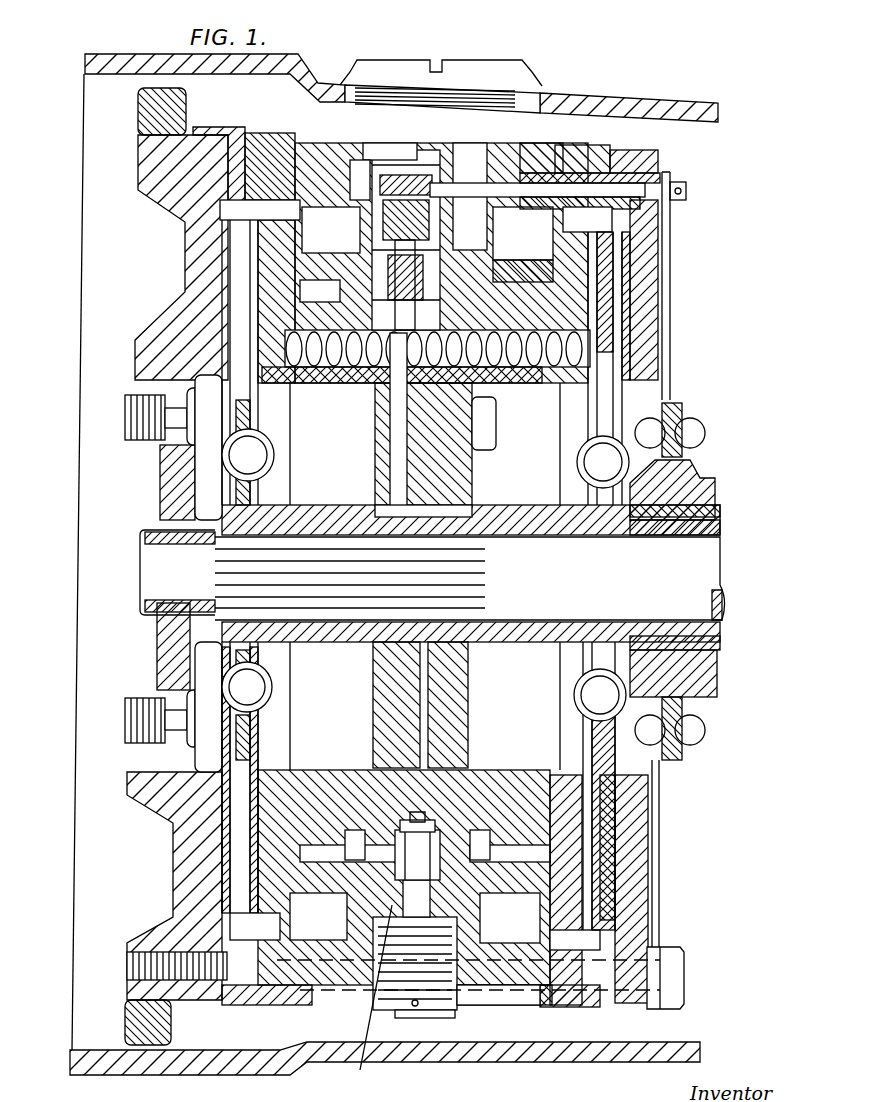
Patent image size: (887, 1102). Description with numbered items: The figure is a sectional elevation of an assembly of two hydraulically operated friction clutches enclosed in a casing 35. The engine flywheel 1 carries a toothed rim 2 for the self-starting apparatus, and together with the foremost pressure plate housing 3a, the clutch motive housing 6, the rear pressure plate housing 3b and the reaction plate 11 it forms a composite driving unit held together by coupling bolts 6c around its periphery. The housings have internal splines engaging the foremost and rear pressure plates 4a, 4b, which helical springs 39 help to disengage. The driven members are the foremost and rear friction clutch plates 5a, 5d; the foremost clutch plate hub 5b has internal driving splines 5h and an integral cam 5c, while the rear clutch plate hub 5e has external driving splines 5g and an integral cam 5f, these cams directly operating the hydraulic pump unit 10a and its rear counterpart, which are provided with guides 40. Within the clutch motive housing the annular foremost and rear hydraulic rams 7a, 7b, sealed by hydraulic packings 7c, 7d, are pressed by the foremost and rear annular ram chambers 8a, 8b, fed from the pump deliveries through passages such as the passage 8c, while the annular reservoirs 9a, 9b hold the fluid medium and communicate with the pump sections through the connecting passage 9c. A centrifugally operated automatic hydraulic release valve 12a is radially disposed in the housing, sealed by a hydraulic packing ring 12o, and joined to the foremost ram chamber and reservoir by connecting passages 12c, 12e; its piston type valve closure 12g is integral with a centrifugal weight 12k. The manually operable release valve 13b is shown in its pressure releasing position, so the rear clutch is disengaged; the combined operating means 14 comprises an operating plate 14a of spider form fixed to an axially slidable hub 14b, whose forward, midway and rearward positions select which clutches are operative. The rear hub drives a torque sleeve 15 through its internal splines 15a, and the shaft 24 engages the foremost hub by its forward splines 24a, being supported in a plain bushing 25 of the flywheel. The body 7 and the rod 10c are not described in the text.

The casing 35 is at (152, 68).
The hydraulic pump unit 10a is at (380, 165).
The toothed rim 2 is at (160, 125).
The engine flywheel 1 is at (160, 160).
The foremost pressure plate housing 3a is at (262, 180).
The clutch motive housing 6 is at (296, 150).
The piston body 7 is at (245, 850).
The helical springs 39 is at (300, 338).
The foremost hydraulic ram 7a is at (331, 230).
The hydraulic packing 7c is at (342, 285).
The hydraulic packing 7d is at (514, 265).
The rear hydraulic ram 7b is at (539, 262).
The connecting passage 9c is at (380, 215).
The passage 8c is at (410, 252).
The foremost annular reservoir 9a is at (338, 207).
The foremost annular ram chamber 8a is at (362, 200).
The rear annular ram chamber 8b is at (487, 225).
The rear annular reservoir 9b is at (503, 220).
The rear pressure plate 4b is at (573, 230).
The rear pressure plate housing 3b is at (570, 150).
The manually operable release valve 13b is at (650, 148).
The reaction plate 11 is at (632, 152).
The combined operating means 14 is at (662, 218).
The rear friction clutch plate 5d is at (623, 315).
The operating plate 14a is at (665, 398).
The axially slidable hub 14b is at (672, 480).
The rear clutch plate hub 5e is at (525, 517).
The torque sleeve 15 is at (700, 522).
The internal splines 15a is at (688, 535).
The external driving splines 5g is at (663, 537).
The foremost clutch plate hub 5b is at (223, 513).
The internal driving splines 5h is at (217, 535).
The foremost friction clutch plate 5a is at (237, 397).
The foremost pressure plate 4a is at (258, 232).
The plain bushing 25 is at (148, 540).
The shaft 24 is at (580, 598).
The splines 24a is at (332, 598).
The guides 40 is at (377, 440).
The control rod 10c is at (395, 400).
The cam 5c is at (380, 502).
The cam 5f is at (468, 650).
The centrifugal weight 12k is at (405, 935).
The connecting passage 12c is at (368, 870).
The connecting passage 12e is at (378, 900).
The piston type valve closure 12g is at (362, 882).
The coupling bolts 6c is at (658, 980).
The hydraulic packing ring 12o is at (430, 1010).
The centrifugally operated automatic hydraulic release valve 12a is at (512, 1005).